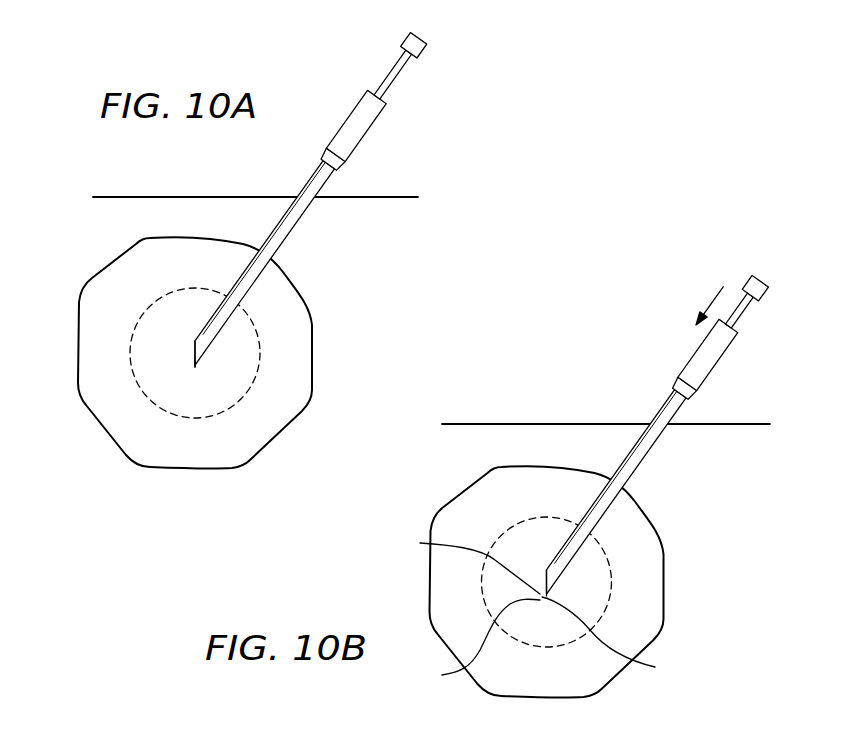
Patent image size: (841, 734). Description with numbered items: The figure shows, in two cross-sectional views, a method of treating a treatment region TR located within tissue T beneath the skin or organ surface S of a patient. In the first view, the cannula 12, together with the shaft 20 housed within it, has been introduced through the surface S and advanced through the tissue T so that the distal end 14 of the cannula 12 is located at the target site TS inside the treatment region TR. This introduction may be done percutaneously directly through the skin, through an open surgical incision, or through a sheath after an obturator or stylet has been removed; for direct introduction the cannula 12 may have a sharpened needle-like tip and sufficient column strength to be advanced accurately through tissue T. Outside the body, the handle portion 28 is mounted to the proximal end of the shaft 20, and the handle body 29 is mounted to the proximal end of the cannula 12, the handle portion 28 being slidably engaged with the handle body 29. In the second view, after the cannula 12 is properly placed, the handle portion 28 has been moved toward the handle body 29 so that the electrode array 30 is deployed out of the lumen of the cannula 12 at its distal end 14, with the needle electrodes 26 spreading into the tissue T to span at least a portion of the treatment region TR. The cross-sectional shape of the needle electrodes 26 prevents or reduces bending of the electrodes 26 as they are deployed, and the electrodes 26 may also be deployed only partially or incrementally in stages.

In FIG. 10A, the cannula 12 is at (259, 263).
In FIG. 10B, the cannula 12 is at (610, 492).
In FIG. 10A, the distal end of the cannula 14 is at (207, 351).
In FIG. 10B, the distal end of the cannula 14 is at (559, 576).
In FIG. 10A, the shaft 20 is at (393, 74).
In FIG. 10A, the handle portion 28 is at (414, 45).
In FIG. 10B, the handle portion 28 is at (755, 287).
In FIG. 10A, the handle body 29 is at (352, 130).
In FIG. 10B, the handle body 29 is at (704, 359).
In FIG. 10B, the needle electrodes 26 is at (537, 605).
In FIG. 10B, the electrode array 30 is at (478, 646).
In FIG. 10A, the skin or organ surface S is at (369, 196).
In FIG. 10B, the skin or organ surface S is at (722, 423).
In FIG. 10A, the tissue T is at (284, 317).
In FIG. 10B, the tissue T is at (634, 544).
In FIG. 10A, the treatment region TR is at (183, 352).
In FIG. 10A, the target site TS is at (192, 373).